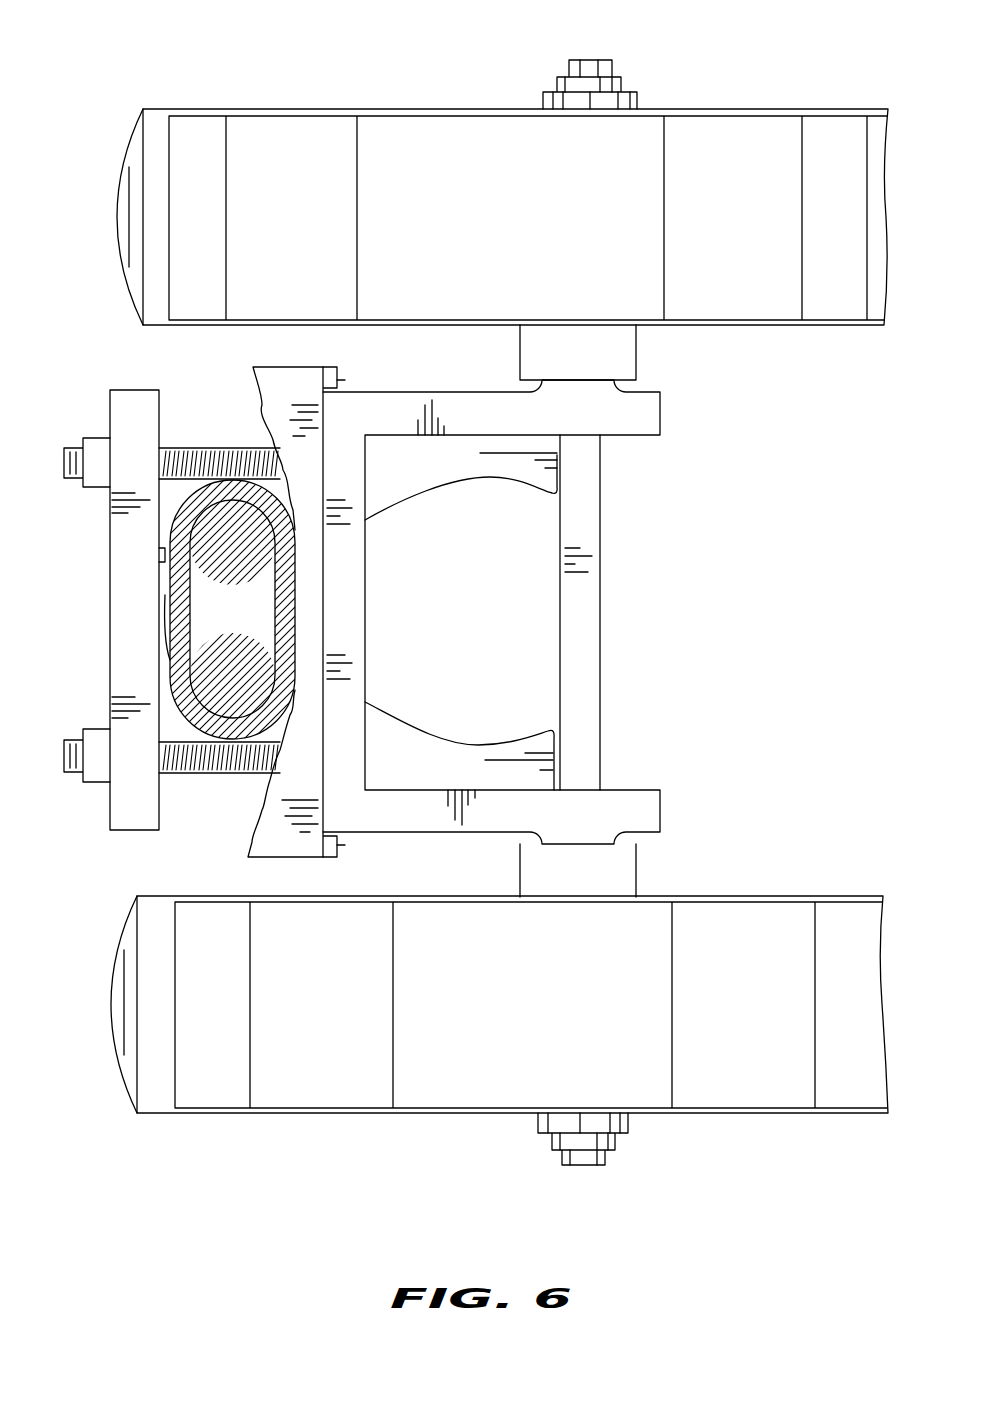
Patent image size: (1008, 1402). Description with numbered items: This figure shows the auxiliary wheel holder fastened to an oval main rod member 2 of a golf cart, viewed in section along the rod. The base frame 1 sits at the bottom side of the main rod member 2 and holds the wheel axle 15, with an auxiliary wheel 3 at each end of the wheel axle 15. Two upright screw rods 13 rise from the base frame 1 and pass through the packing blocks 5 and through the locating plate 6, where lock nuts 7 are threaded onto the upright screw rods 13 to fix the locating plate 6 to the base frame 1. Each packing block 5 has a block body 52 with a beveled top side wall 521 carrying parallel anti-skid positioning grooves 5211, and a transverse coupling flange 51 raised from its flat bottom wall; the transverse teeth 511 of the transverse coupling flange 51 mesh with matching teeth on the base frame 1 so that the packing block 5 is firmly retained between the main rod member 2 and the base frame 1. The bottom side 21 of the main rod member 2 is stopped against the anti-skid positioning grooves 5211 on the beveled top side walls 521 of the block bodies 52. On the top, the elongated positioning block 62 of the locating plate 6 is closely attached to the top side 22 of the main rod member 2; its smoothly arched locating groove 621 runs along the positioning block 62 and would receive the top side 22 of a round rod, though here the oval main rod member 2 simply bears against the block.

The base frame 1 is at (472, 392).
The wheel axle 15 is at (600, 625).
The main rod member 2 is at (297, 651).
The bottom side of the main rod member 21 is at (274, 532).
The top side of the main rod member 22 is at (219, 648).
The auxiliary wheel 3 is at (741, 108).
The packing block 5 is at (311, 616).
The transverse coupling flange 51 is at (384, 615).
The transverse teeth 511 is at (348, 374).
The block body 52 is at (249, 614).
The beveled top side wall 521 is at (262, 400).
The anti-skid positioning grooves 5211 is at (262, 417).
The locating plate 6 is at (102, 610).
The elongated positioning block 62 is at (164, 556).
The locating groove 621 is at (170, 613).
The lock nut 7 is at (88, 438).
The upright screw rod 13 is at (165, 446).